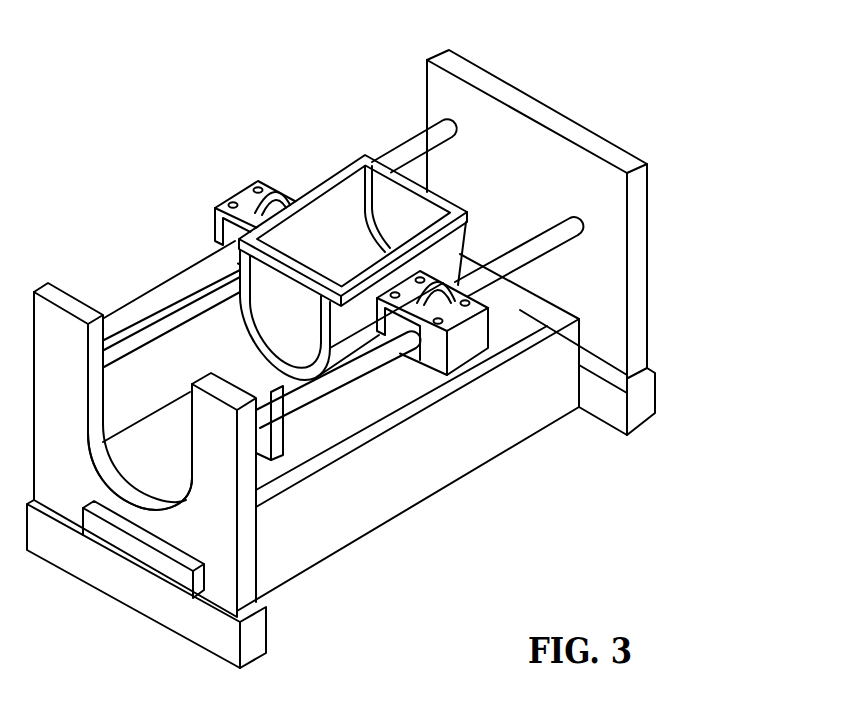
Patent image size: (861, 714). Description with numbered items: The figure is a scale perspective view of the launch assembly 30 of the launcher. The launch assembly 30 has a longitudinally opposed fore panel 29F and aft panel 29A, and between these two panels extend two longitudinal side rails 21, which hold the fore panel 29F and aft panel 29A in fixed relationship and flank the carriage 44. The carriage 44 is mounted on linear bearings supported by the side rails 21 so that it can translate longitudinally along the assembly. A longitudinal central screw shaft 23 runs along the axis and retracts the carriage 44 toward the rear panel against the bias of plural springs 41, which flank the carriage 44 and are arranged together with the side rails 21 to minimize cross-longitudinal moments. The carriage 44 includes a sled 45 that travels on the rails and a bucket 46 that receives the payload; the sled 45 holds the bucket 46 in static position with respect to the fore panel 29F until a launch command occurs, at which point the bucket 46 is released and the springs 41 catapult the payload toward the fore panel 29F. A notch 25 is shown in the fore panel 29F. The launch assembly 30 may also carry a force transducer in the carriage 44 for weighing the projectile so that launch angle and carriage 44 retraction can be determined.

The rail 21 is at (308, 535).
The shaft 23 is at (418, 147).
The notch 25 is at (148, 460).
The fore panel 29F is at (70, 308).
The aft panel 29A is at (527, 105).
The launch assembly 30 is at (680, 513).
The spring 41 is at (165, 292).
The carriage 44 is at (265, 75).
The sled 45 is at (253, 200).
The bucket 46 is at (337, 217).